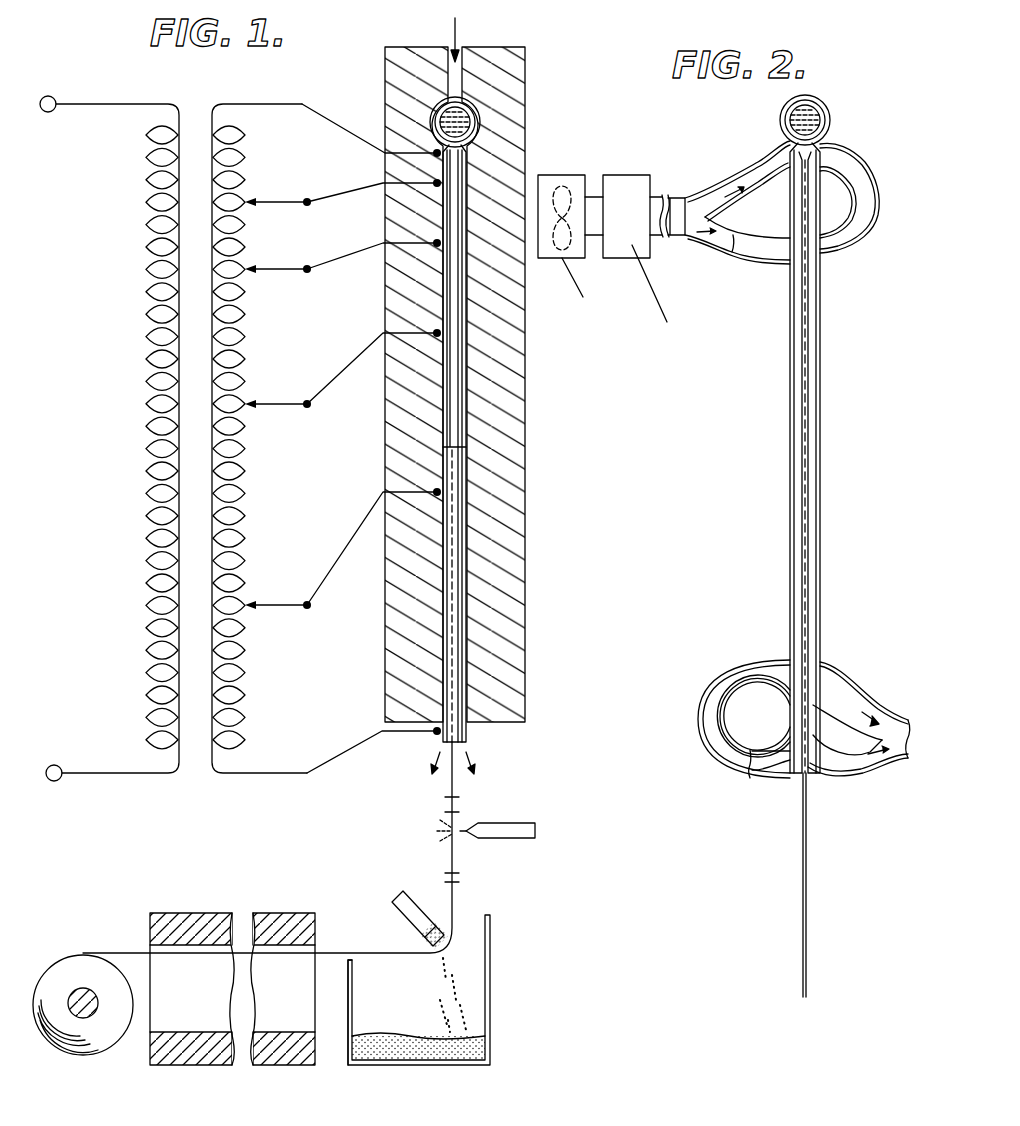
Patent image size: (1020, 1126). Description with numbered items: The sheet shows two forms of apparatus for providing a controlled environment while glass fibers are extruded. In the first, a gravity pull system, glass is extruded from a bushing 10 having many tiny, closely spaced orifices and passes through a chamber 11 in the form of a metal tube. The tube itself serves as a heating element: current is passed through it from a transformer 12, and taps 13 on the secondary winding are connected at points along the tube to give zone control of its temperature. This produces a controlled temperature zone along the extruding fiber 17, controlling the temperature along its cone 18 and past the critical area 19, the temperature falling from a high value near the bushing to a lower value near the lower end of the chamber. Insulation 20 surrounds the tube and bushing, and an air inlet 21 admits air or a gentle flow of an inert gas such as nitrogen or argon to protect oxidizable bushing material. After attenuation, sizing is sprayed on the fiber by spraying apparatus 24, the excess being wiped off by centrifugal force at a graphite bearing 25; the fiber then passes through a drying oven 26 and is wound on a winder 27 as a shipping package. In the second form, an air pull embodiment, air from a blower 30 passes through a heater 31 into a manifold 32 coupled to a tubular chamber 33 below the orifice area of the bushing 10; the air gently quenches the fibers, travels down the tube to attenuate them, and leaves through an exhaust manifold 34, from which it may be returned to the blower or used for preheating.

In FIG. 1, the bushing 10 is at (472, 115).
In FIG. 2, the bushing 10 is at (820, 111).
In FIG. 1, the chamber 11 is at (470, 360).
In FIG. 1, the transformer 12 is at (192, 118).
In FIG. 1, the taps 13 is at (274, 268).
In FIG. 1, the extruding fiber 17 is at (455, 527).
In FIG. 1, the cone 18 is at (452, 305).
In FIG. 1, the critical area 19 is at (452, 632).
In FIG. 1, the insulation 20 is at (508, 466).
In FIG. 1, the air inlet 21 is at (459, 49).
In FIG. 1, the spraying apparatus 24 is at (500, 827).
In FIG. 1, the graphite bearing 25 is at (432, 948).
In FIG. 1, the drying oven 26 is at (259, 915).
In FIG. 1, the winder 27 is at (78, 966).
In FIG. 1, the blower 30 is at (558, 184).
In FIG. 1, the heater 31 is at (617, 183).
In FIG. 2, the manifold 32 is at (738, 244).
In FIG. 2, the chamber 33 is at (790, 310).
In FIG. 2, the exhaust manifold 34 is at (742, 672).